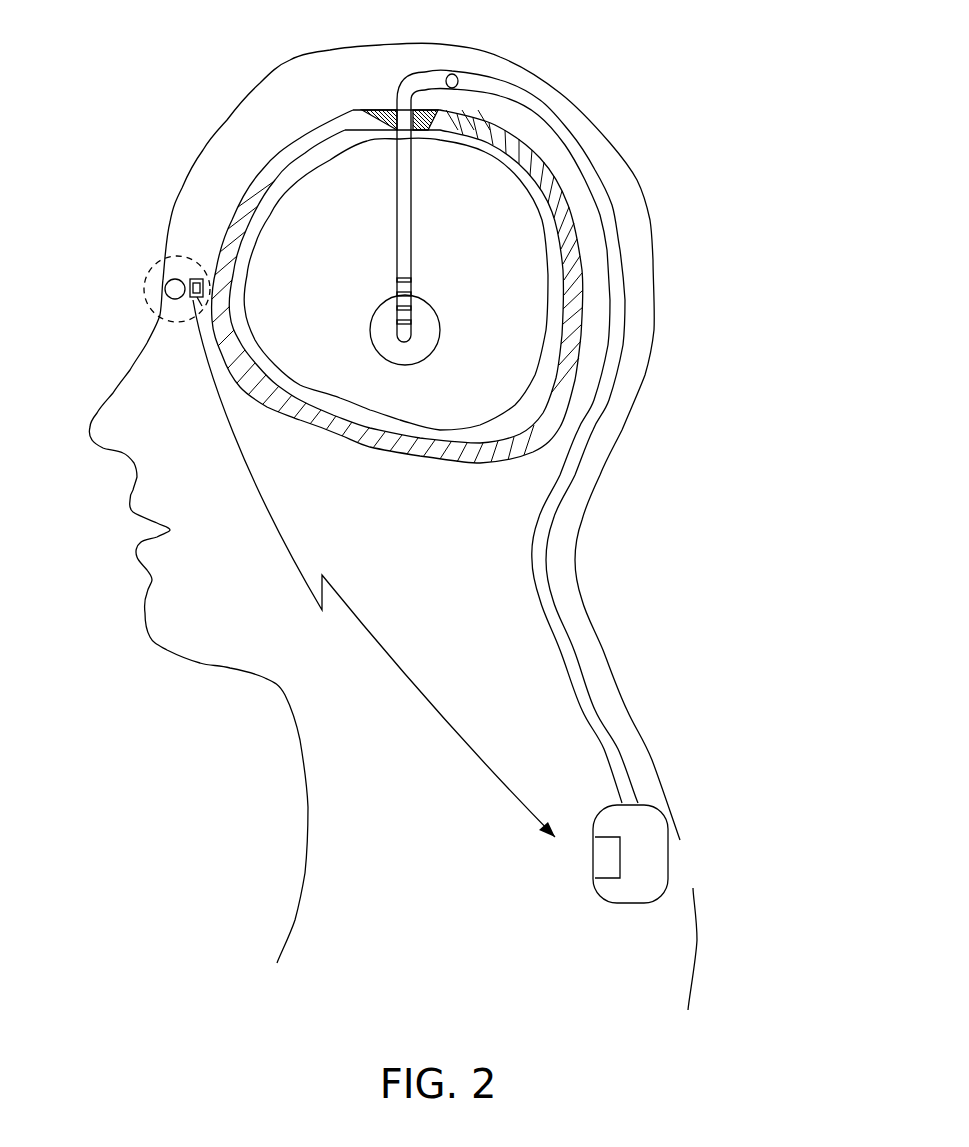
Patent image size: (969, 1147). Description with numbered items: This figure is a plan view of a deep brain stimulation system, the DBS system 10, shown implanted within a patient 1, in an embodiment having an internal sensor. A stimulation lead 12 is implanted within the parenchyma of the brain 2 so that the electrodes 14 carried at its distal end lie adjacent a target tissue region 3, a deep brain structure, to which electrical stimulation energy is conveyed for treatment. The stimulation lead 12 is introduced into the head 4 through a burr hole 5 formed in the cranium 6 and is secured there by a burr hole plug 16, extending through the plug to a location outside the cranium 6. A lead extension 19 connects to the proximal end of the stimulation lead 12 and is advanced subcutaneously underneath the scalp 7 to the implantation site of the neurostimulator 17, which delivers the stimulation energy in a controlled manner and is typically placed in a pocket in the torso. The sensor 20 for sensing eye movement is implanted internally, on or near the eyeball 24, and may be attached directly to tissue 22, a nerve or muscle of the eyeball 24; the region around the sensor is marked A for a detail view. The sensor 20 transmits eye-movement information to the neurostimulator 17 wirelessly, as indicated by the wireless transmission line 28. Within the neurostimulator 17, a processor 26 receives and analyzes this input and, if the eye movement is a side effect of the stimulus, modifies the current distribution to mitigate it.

The patient 1 is at (127, 200).
The brain 2 is at (530, 285).
The target tissue region 3 is at (382, 347).
The head 4 is at (291, 62).
The burr hole 5 is at (353, 110).
The cranium 6 is at (270, 155).
The scalp 7 is at (615, 170).
The DBS system 10 is at (476, 579).
The stimulation lead 12 is at (410, 213).
The electrodes 14 is at (412, 300).
The burr hole plug 16 is at (387, 110).
The neurostimulator 17 is at (637, 862).
The lead extension 19 is at (565, 137).
The sensor 20 is at (198, 278).
The tissue 22 is at (206, 305).
The eyeball 24 is at (177, 287).
The processor 26 is at (603, 858).
The wireless transmission line 28 is at (282, 538).
The detail region A is at (147, 287).